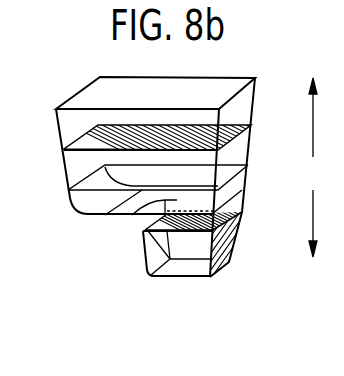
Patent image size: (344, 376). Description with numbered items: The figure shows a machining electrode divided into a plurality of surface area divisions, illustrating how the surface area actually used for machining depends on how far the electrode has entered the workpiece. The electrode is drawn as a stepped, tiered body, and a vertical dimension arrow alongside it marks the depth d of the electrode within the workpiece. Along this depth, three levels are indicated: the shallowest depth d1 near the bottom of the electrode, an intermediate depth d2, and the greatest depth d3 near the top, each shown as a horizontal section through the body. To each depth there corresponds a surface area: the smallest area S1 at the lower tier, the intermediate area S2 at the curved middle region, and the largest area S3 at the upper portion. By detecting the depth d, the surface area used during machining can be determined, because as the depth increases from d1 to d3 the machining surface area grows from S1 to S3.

The surface area S3 is at (88, 141).
The surface area S2 is at (133, 216).
The surface area S1 is at (143, 247).
The depth d3 is at (186, 135).
The depth d2 is at (173, 183).
The depth d1 is at (211, 217).
The depth d is at (316, 167).